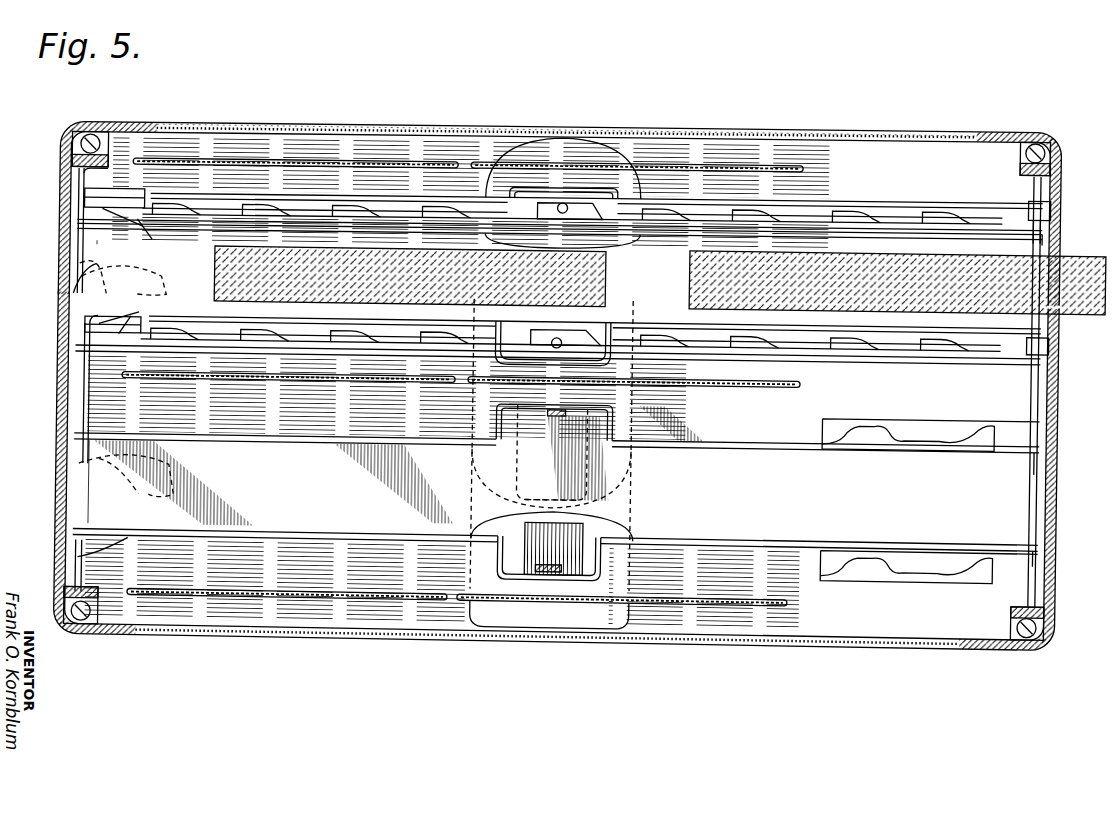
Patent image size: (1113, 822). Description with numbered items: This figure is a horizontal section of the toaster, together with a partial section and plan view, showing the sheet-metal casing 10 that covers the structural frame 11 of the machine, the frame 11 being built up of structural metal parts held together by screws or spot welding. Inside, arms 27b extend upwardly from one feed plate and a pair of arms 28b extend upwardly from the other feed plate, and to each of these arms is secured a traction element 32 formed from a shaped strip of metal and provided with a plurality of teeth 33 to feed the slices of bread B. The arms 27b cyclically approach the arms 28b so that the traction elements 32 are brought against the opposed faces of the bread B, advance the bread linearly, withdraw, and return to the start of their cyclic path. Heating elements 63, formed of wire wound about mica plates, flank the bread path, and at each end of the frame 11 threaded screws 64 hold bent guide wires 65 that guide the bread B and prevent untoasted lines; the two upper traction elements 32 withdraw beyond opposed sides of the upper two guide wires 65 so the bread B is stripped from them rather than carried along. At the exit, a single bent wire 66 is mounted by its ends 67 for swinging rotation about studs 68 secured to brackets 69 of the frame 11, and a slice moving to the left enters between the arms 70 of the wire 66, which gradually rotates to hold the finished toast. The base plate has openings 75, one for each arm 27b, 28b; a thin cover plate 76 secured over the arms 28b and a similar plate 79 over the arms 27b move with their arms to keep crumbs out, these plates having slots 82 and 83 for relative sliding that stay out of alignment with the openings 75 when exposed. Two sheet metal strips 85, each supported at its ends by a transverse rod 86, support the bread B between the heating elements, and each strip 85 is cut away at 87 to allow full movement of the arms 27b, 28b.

The casing 10 is at (468, 123).
The frame 11 is at (105, 133).
The arms 27b is at (557, 196).
The arms 28b is at (555, 362).
The traction element 32 is at (669, 200).
The teeth 33 is at (317, 216).
The heating elements 63 is at (296, 163).
The threaded screws 64 is at (1048, 207).
The guide wires 65 is at (842, 234).
The wire 66 is at (61, 284).
The ends 67 is at (117, 233).
The studs 68 is at (130, 215).
The brackets 69 is at (102, 201).
The arms 70 is at (103, 262).
The openings 75 is at (598, 574).
The cover plate 76 is at (589, 580).
The plate 79 is at (596, 149).
The slots 82 is at (632, 506).
The slots 83 is at (579, 325).
The sheet metal strip 85 is at (397, 386).
The rod 86 is at (78, 570).
The cut away 87 is at (611, 456).
The bread slices B is at (660, 279).